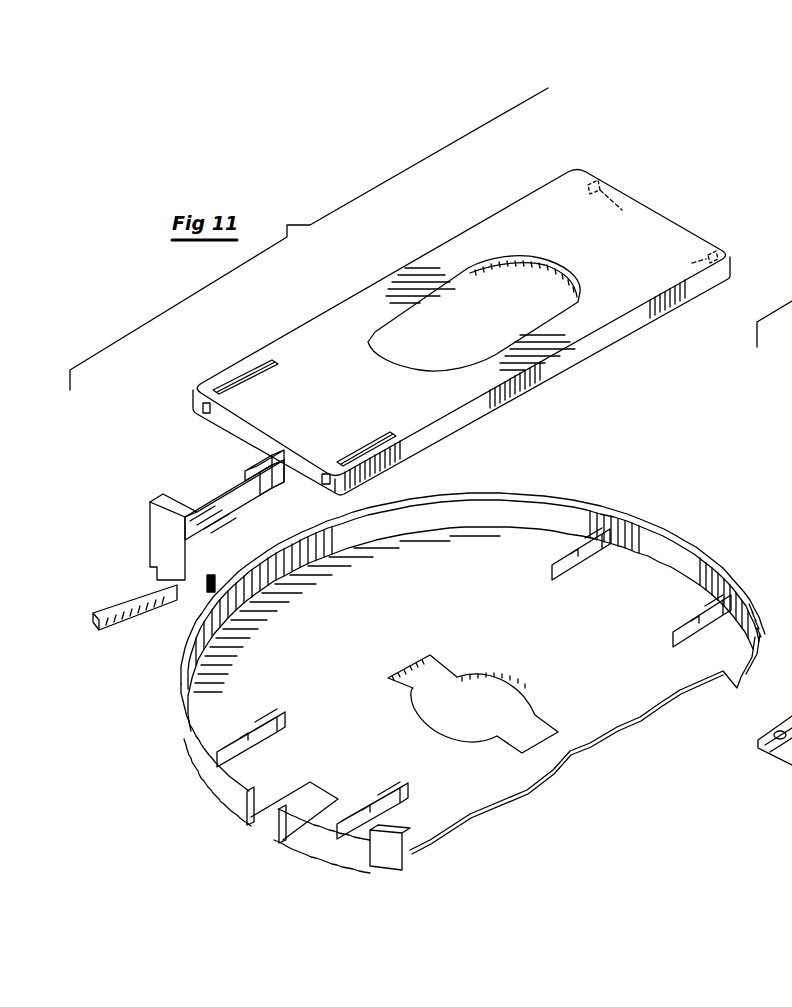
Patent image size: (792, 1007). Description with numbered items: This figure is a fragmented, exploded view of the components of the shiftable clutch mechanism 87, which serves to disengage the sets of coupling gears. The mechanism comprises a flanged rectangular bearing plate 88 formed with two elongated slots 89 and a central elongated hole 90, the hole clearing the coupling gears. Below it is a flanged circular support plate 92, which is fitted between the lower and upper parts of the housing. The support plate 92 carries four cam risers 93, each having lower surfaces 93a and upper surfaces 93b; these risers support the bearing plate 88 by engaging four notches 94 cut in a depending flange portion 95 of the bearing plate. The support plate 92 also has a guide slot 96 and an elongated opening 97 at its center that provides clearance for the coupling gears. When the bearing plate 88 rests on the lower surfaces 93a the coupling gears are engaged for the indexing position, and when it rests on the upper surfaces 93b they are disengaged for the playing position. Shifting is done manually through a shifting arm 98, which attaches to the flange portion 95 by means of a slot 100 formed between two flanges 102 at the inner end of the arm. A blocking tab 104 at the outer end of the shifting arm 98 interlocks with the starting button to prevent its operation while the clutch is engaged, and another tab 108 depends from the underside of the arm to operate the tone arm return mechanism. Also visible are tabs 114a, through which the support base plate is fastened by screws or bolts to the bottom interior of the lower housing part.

The shiftable clutch mechanism 87 is at (340, 288).
The flanged rectangular bearing plate 88 is at (580, 241).
The elongated slots 89 is at (243, 366).
The elongated hole 90 is at (455, 283).
The flanged circular support plate 92 is at (549, 643).
The cam risers 93 is at (578, 565).
The lower surfaces 93a is at (556, 556).
The upper surfaces 93b is at (596, 526).
The notches 94 is at (596, 178).
The depending flange portion 95 is at (597, 350).
The guide slot 96 is at (265, 822).
The elongated opening 97 is at (441, 668).
The shifting arm 98 is at (160, 530).
The slot 100 is at (278, 492).
The flanges 102 is at (258, 472).
The blocking tab 104 is at (138, 598).
The tab 108 is at (204, 583).
The tabs 114a is at (768, 733).